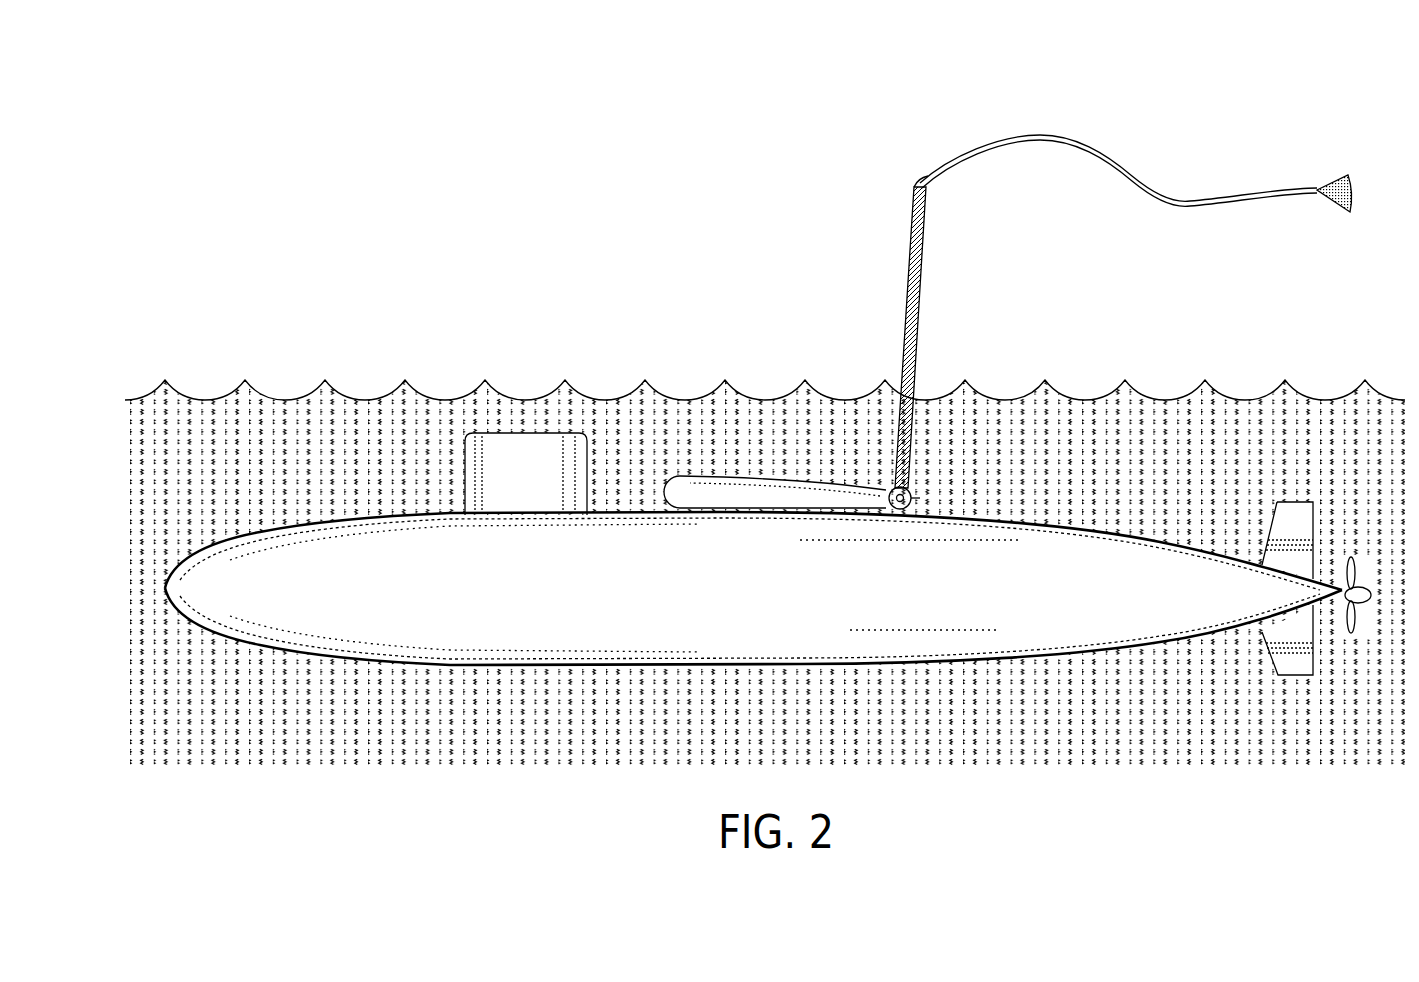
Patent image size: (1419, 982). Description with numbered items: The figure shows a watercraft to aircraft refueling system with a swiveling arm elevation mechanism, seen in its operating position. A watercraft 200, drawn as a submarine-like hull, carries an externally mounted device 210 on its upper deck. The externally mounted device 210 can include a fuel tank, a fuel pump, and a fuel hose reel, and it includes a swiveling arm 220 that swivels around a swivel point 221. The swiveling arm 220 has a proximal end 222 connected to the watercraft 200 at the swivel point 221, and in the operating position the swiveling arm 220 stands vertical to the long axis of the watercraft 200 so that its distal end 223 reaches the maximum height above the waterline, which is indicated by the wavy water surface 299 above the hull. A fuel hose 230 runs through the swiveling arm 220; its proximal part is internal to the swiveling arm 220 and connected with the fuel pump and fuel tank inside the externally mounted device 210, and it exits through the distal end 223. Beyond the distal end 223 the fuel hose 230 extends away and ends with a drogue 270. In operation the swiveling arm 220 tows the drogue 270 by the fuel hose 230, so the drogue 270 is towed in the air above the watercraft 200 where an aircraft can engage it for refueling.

The watercraft 200 is at (934, 593).
The externally mounted device 210 is at (712, 477).
The swiveling arm 220 is at (922, 289).
The swivel point 221 is at (914, 498).
The proximal end 222 is at (893, 486).
The distal end 223 is at (915, 186).
The fuel hose 230 is at (1088, 146).
The drogue 270 is at (1337, 176).
The water surface 299 is at (348, 398).